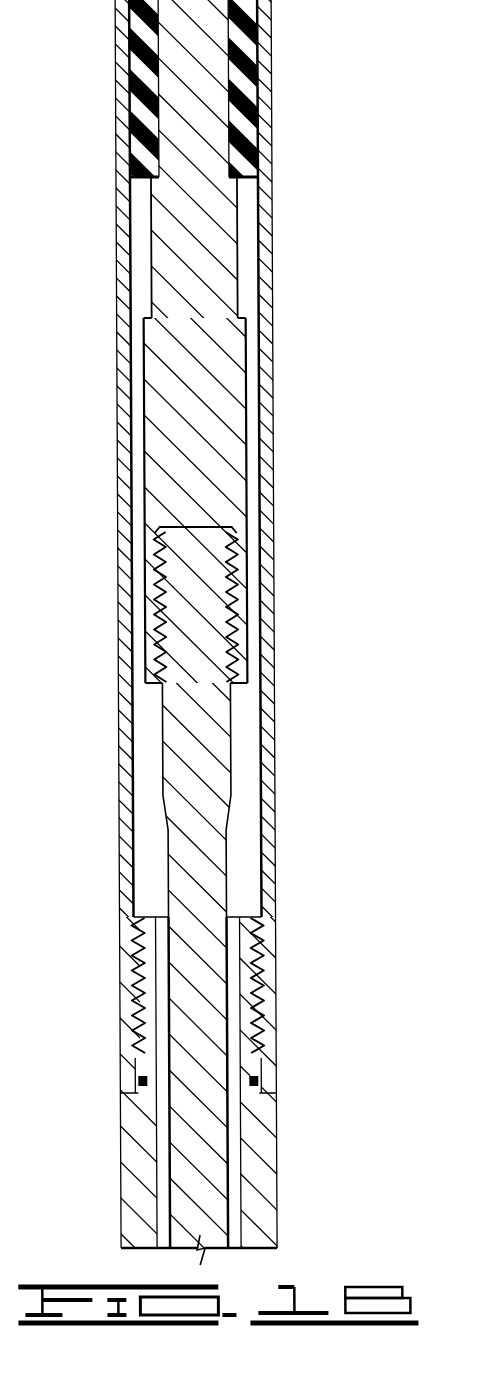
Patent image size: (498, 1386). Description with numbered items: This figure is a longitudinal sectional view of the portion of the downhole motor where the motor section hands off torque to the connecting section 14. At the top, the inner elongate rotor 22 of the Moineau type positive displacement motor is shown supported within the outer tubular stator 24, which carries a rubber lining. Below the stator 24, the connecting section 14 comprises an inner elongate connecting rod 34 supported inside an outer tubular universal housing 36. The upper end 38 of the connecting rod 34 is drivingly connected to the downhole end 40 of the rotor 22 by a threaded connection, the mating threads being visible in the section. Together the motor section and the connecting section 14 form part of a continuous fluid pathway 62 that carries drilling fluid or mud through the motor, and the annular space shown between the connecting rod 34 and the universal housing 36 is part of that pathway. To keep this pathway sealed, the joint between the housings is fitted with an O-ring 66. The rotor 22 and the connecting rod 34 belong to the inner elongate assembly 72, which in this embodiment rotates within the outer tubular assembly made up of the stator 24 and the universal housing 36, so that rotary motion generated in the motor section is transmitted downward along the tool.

The connecting section 14 is at (274, 1118).
The rotor 22 is at (224, 243).
The stator 24 is at (275, 50).
The connecting rod 34 is at (219, 1165).
The universal housing 36 is at (260, 1180).
The upper end of the connecting rod 38 is at (197, 590).
The downhole end of the rotor 40 is at (240, 643).
The continuous fluid pathway 62 is at (236, 843).
The O-ring 66 is at (259, 1072).
The inner elongate assembly 72 is at (226, 1192).